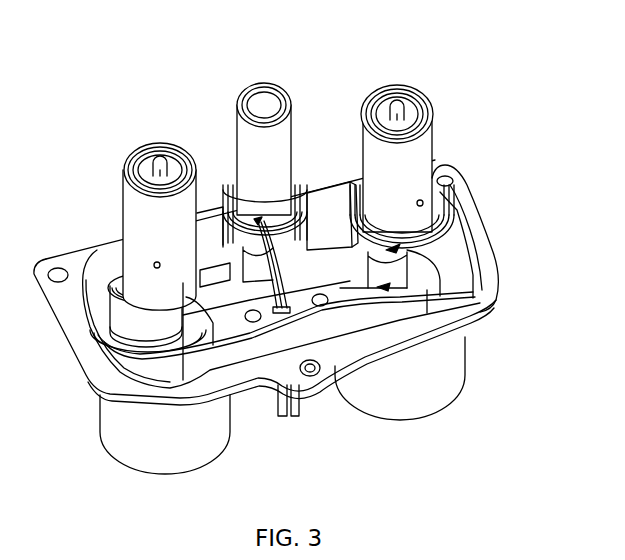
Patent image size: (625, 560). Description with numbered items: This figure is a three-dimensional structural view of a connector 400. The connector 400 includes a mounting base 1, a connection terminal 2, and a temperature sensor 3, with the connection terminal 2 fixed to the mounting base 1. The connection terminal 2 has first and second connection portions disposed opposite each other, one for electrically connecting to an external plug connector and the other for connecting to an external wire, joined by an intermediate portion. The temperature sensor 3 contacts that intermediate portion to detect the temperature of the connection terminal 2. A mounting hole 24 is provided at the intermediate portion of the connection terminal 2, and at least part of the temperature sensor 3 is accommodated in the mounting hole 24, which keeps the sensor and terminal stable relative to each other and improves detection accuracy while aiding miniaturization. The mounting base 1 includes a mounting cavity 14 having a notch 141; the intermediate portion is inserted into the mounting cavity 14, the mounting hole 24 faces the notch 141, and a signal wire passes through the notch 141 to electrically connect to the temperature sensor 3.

The connector 400 is at (286, 21).
The mounting base 1 is at (430, 333).
The connection terminal 2 is at (410, 160).
The temperature sensor 3 is at (245, 186).
The mounting hole 24 is at (257, 218).
The mounting cavity 14 is at (440, 300).
The notch 141 is at (455, 219).